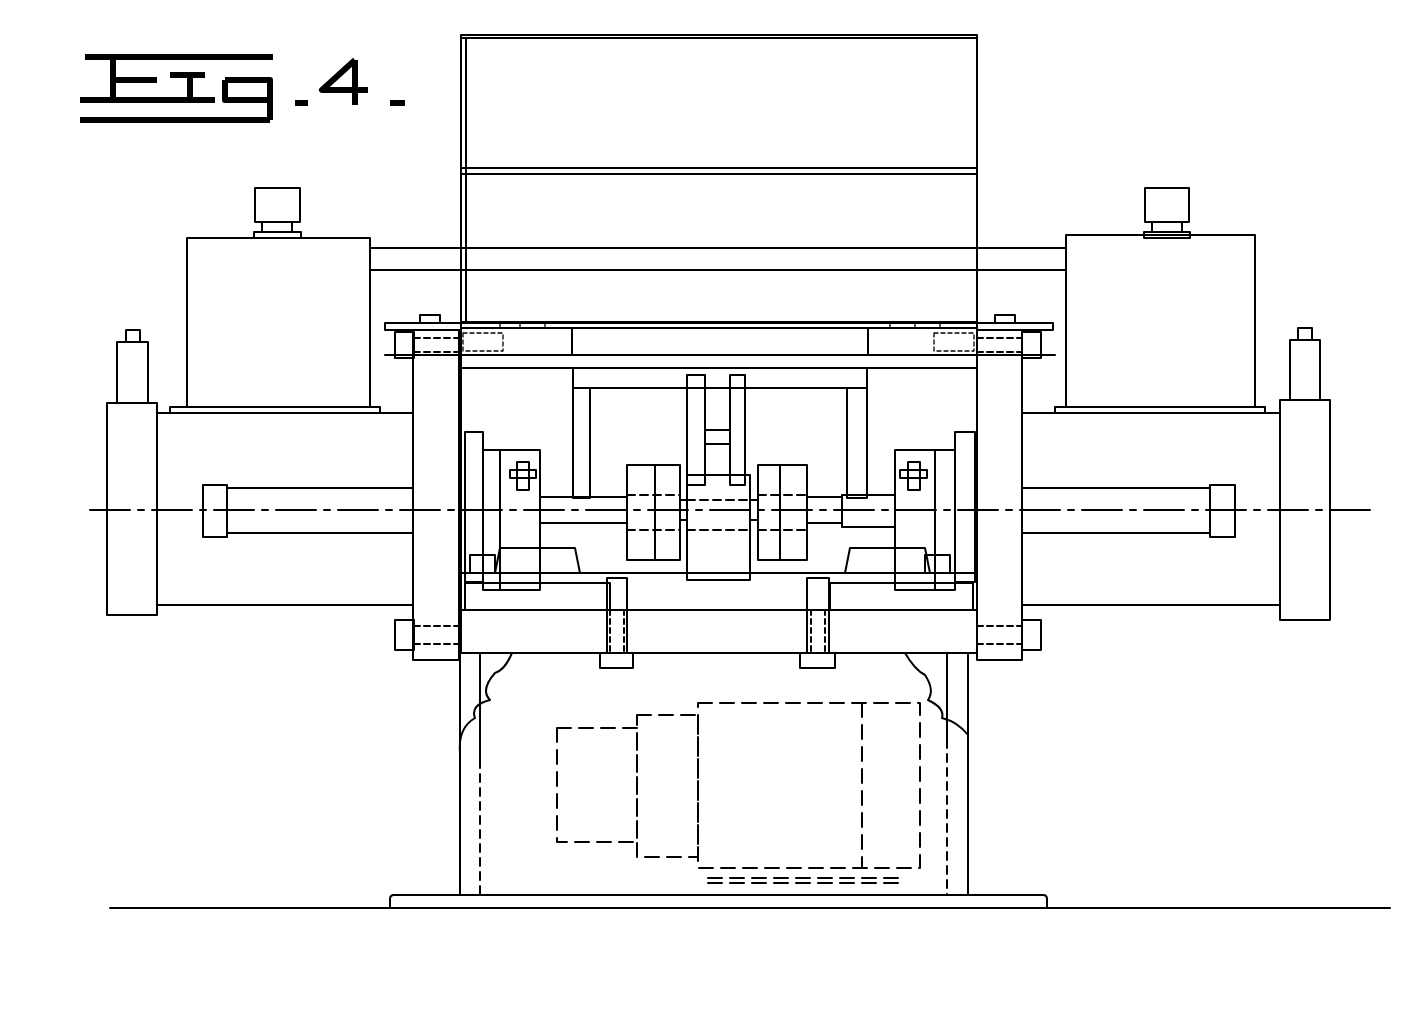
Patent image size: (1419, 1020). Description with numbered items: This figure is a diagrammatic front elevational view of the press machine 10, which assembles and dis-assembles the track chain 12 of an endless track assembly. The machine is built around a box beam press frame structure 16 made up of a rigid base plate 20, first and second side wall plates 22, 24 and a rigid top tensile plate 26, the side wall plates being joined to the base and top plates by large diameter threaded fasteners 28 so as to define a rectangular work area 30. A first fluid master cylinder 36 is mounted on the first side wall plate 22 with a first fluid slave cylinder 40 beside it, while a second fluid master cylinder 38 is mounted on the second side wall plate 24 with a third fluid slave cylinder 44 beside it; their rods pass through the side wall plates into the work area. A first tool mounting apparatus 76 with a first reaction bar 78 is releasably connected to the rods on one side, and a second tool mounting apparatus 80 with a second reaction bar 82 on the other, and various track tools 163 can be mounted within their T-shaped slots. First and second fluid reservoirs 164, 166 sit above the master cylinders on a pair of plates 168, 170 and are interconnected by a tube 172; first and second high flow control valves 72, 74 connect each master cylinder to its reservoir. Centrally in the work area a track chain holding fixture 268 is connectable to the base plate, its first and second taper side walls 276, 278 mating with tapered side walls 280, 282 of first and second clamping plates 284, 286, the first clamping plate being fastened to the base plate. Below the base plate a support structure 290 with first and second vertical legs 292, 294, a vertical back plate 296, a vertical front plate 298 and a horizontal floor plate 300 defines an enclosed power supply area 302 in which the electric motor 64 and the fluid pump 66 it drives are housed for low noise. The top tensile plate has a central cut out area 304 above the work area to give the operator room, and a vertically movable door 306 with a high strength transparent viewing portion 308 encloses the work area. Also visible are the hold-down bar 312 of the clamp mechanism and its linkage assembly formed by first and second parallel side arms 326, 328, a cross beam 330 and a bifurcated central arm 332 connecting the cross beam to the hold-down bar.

The press machine 10 is at (1095, 180).
The track chain 12 is at (735, 478).
The box beam press frame structure 16 is at (410, 538).
The base plate 20 is at (725, 655).
The first side wall plate 22 is at (1005, 430).
The second side wall plate 24 is at (420, 433).
The top tensile plate 26 is at (556, 342).
The threaded fasteners 28 is at (395, 340).
The work area 30 is at (492, 391).
The first fluid master cylinder 36 is at (1210, 453).
The second fluid master cylinder 38 is at (262, 453).
The first fluid slave cylinder 40 is at (1123, 527).
The third fluid slave cylinder 44 is at (275, 526).
The electric motor 64 is at (905, 797).
The fluid pump 66 is at (572, 820).
The first pilot operated high flow capacity control valve 72 is at (1312, 332).
The second pilot operated high flow capacity control valve 74 is at (128, 335).
The first tool mounting apparatus 76 is at (914, 448).
The first reaction bar 78 is at (942, 482).
The second tool mounting apparatus 80 is at (523, 448).
The second reaction bar 82 is at (495, 487).
The track tools 163 is at (595, 500).
The first fluid reservoir 164 is at (1187, 285).
The second fluid reservoir 166 is at (292, 310).
The plate 168 is at (1052, 325).
The plate 170 is at (400, 325).
The tube 172 is at (1012, 252).
The track chain holding fixture 268 is at (718, 596).
The first taper side wall 276 is at (636, 592).
The second taper side wall 278 is at (800, 590).
The tapered side wall 280 is at (600, 594).
The tapered side wall 282 is at (832, 594).
The first clamping plate 284 is at (518, 616).
The second clamping plate 286 is at (882, 616).
The support structure 290 is at (458, 783).
The first vertical leg 292 is at (960, 703).
The second vertical leg 294 is at (465, 670).
The vertical back plate 296 is at (950, 672).
The vertical front plate 298 is at (500, 858).
The horizontal floor plate 300 is at (1020, 893).
The enclosed power supply area 302 is at (512, 813).
The central cut out area 304 is at (862, 348).
The vertically movable door 306 is at (978, 82).
The transparent viewing portion 308 is at (750, 229).
The hold-down bar 312 is at (695, 470).
The first parallel side arm 326 is at (598, 385).
The second parallel side arm 328 is at (852, 422).
The cross beam 330 is at (672, 382).
The bifurcated central arm 332 is at (740, 402).